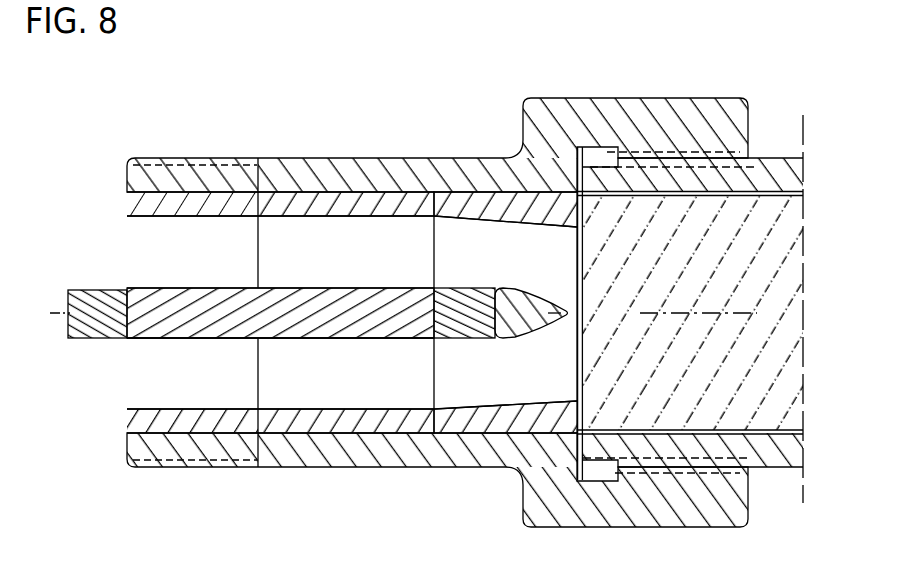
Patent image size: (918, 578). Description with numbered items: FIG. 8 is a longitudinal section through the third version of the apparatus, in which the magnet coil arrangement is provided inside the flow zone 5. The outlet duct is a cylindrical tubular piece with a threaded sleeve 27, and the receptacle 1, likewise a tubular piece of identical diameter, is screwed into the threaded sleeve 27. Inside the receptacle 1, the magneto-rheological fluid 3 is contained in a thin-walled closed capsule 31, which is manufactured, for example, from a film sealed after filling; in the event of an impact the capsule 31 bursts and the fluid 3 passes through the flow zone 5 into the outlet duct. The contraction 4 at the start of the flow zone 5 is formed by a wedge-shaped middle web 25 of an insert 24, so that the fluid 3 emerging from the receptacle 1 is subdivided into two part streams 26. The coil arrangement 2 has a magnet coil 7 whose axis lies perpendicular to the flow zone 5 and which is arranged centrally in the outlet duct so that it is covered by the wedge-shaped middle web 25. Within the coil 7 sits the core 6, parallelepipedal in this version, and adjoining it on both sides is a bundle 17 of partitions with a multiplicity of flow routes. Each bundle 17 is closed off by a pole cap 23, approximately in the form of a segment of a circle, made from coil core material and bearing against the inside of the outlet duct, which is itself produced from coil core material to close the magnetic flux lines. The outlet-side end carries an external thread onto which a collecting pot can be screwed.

The receptacle 1 is at (697, 173).
The coil arrangement 2 is at (165, 295).
The magneto-rheological fluid 3 is at (730, 370).
The contraction 4 is at (571, 262).
The flow zone 5 is at (288, 172).
The core 6 is at (157, 322).
The magnet coil 7 is at (85, 303).
The bundle of partitions 17 is at (348, 227).
The pole cap 23 is at (172, 203).
The insert 24 is at (483, 198).
The wedge-shaped middle web 25 is at (535, 317).
The part streams 26 is at (492, 262).
The threaded sleeve 27 is at (737, 510).
The capsule 31 is at (770, 192).